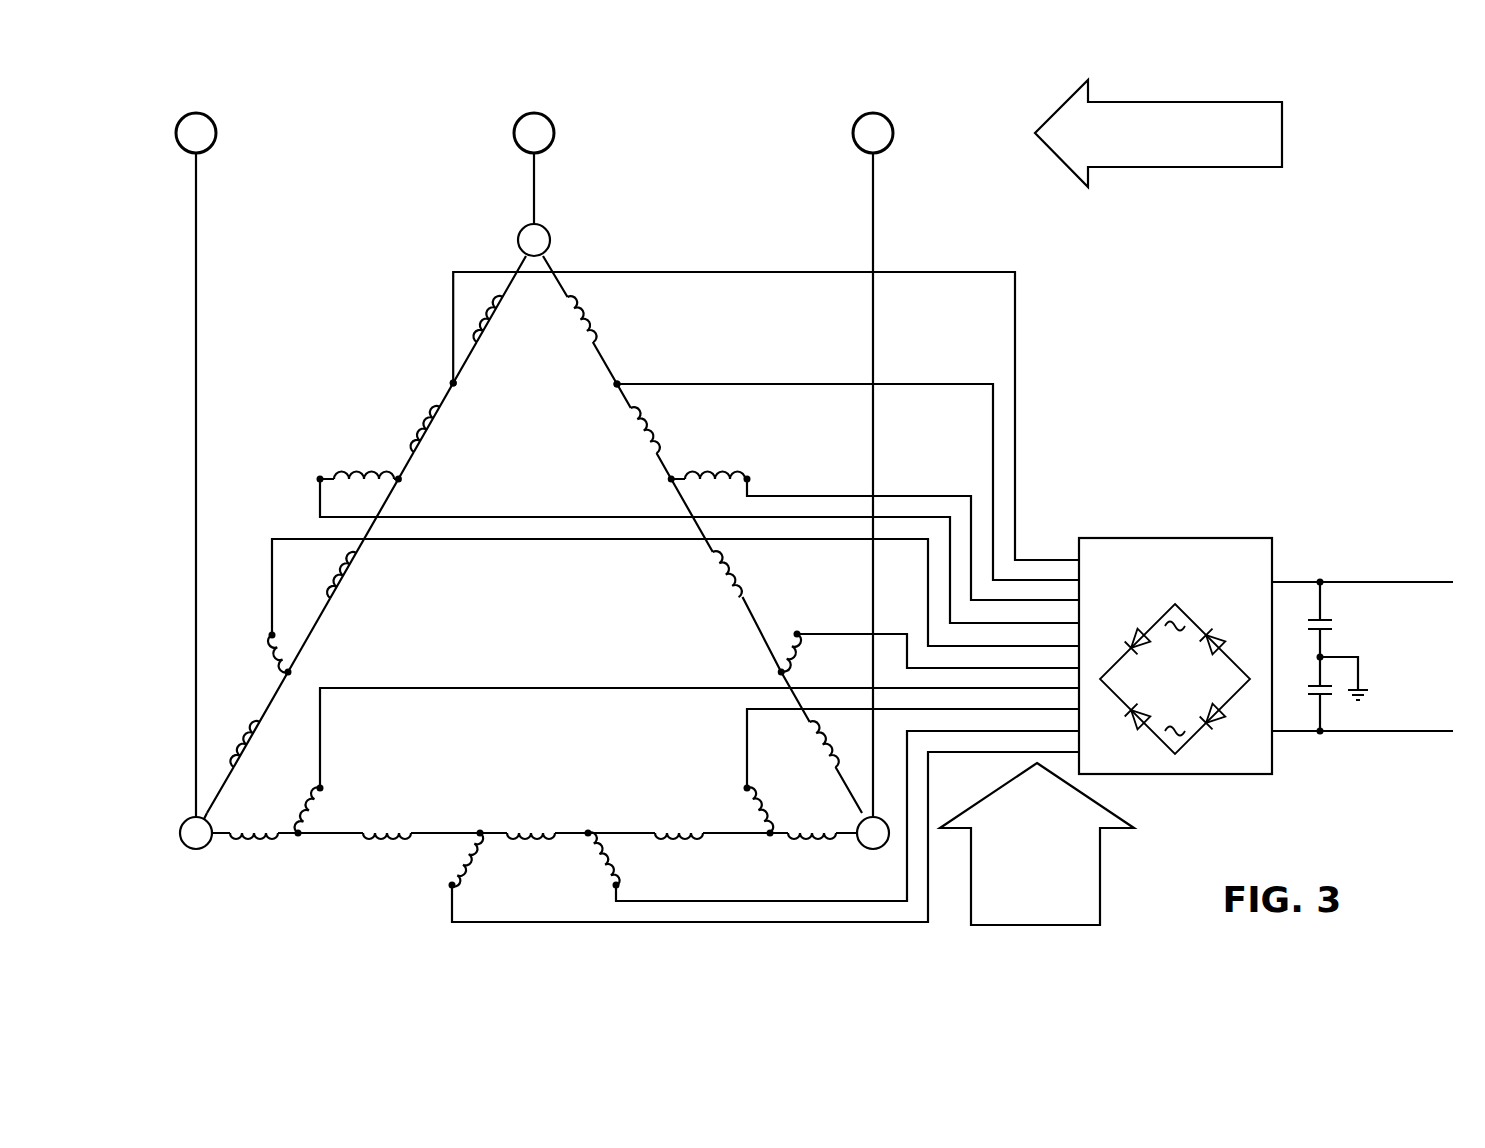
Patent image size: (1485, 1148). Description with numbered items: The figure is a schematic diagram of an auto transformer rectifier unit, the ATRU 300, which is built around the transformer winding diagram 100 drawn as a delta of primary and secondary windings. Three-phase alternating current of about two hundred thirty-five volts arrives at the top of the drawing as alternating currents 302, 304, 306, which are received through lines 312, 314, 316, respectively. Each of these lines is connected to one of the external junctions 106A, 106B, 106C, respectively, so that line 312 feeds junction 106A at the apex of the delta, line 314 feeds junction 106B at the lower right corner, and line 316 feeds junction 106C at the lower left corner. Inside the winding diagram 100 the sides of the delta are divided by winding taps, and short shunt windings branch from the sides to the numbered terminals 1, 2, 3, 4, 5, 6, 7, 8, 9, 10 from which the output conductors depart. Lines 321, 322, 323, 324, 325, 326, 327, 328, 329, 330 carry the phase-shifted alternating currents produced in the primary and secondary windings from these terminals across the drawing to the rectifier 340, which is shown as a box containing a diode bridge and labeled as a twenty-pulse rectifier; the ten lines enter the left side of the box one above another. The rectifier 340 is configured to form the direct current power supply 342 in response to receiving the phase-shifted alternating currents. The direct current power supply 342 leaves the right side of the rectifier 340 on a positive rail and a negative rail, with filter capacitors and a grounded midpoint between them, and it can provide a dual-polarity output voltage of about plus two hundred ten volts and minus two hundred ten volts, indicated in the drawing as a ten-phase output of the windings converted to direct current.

The winding diagram 100 is at (313, 367).
The external junction 106A is at (518, 240).
The external junction 106B is at (861, 823).
The external junction 106C is at (182, 845).
The auto transformer rectifier unit 300 is at (1386, 145).
The alternating current 302 is at (514, 133).
The alternating current 304 is at (893, 133).
The alternating current 306 is at (178, 133).
The line 312 is at (534, 185).
The line 314 is at (873, 185).
The line 316 is at (196, 185).
The line 321 is at (711, 272).
The line 322 is at (742, 384).
The line 323 is at (808, 496).
The line 324 is at (830, 634).
The line 325 is at (747, 733).
The line 326 is at (745, 901).
The line 327 is at (530, 922).
The line 328 is at (534, 688).
The line 329 is at (530, 539).
The line 330 is at (530, 517).
The rectifier 340 is at (1158, 694).
The direct current power supply 342 is at (1389, 735).
The winding tap 1 is at (448, 384).
The winding tap 2 is at (621, 370).
The winding tap 3 is at (717, 470).
The winding tap 4 is at (792, 643).
The winding tap 5 is at (754, 799).
The winding tap 6 is at (611, 863).
The winding tap 7 is at (459, 865).
The winding tap 8 is at (314, 799).
The winding tap 9 is at (269, 650).
The winding tap 10 is at (348, 469).